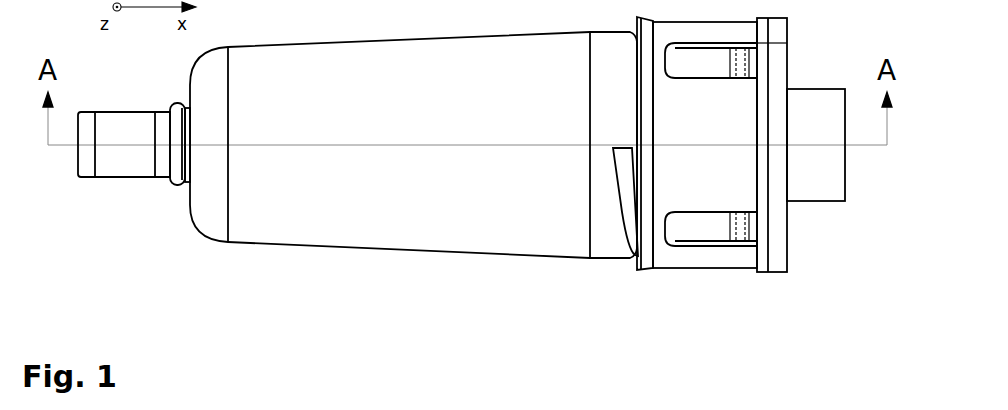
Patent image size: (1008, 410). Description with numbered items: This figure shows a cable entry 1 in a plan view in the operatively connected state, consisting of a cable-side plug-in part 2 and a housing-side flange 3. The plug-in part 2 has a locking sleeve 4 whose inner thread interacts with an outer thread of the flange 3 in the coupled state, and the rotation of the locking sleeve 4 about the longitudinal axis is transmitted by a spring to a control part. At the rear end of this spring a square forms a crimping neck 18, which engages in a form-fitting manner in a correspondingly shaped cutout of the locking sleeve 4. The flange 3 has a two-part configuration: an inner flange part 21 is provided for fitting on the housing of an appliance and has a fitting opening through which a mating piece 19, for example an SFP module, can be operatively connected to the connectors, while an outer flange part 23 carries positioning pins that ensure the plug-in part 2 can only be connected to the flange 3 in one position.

The cable entry 1 is at (487, 203).
The cable-side plug-in part 2 is at (413, 211).
The housing-side flange 3 is at (670, 203).
The locking sleeve 4 is at (558, 269).
The crimping neck 18 is at (145, 246).
The mating piece 19 is at (842, 239).
The inner flange part 21 is at (786, 204).
The outer flange part 23 is at (717, 219).